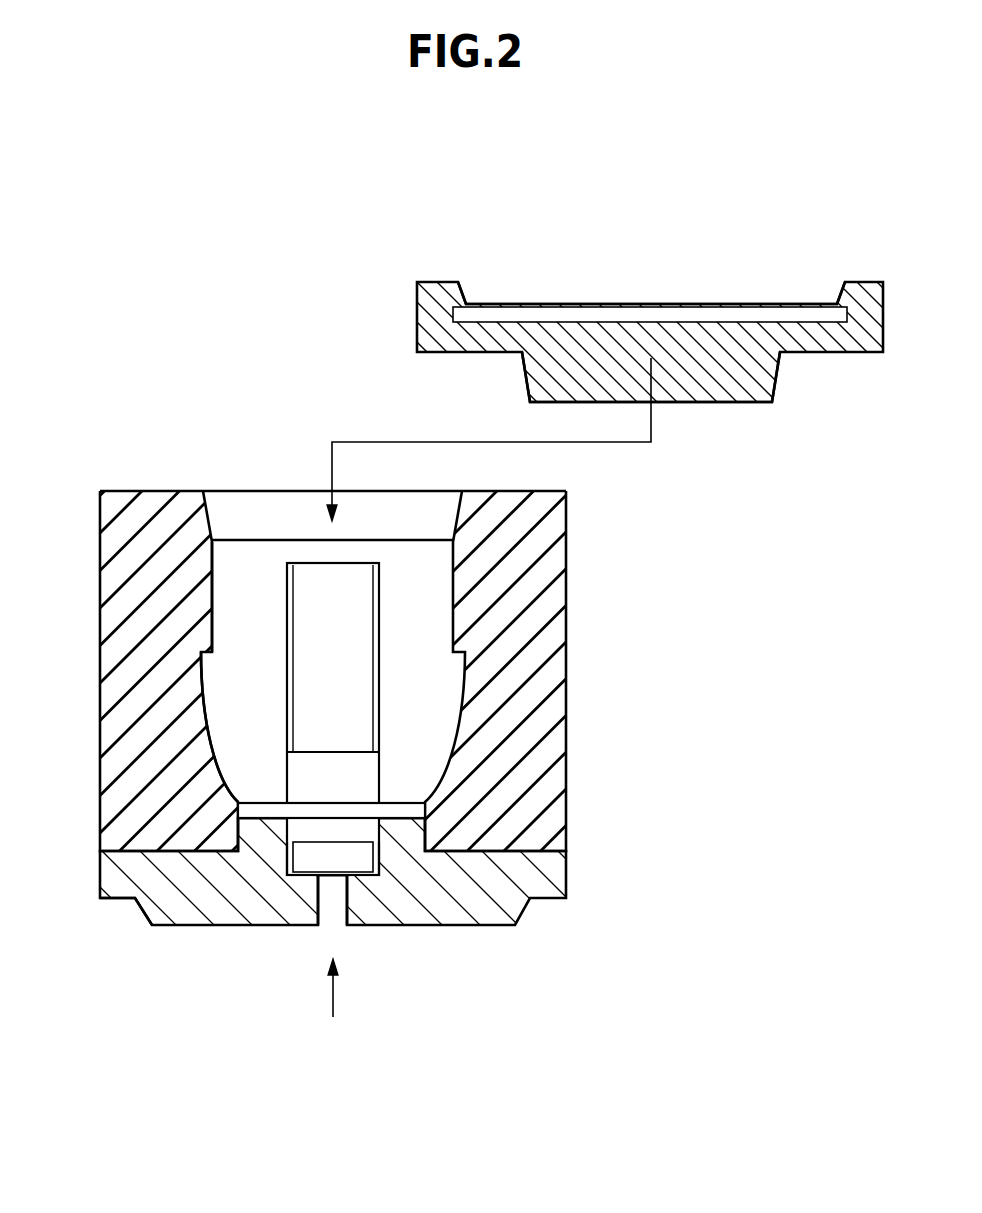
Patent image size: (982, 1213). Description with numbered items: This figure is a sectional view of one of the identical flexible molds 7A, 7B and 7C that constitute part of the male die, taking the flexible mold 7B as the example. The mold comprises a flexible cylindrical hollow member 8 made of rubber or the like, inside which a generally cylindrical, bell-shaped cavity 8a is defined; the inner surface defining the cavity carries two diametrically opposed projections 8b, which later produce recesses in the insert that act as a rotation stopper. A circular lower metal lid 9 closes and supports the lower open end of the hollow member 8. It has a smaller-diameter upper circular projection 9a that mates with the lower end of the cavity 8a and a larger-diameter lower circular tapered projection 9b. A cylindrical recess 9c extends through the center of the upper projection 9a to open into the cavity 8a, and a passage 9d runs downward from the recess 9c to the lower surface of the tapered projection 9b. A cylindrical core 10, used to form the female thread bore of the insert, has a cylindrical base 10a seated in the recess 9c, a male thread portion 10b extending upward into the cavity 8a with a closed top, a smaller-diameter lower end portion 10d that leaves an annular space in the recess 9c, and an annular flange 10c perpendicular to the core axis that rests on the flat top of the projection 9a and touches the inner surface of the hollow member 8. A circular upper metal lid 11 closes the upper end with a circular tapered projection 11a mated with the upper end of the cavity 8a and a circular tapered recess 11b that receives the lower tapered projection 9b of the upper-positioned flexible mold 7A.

The flexible mold 7A is at (650, 437).
The flexible mold 7B is at (349, 758).
The flexible mold 7C is at (334, 1005).
The flexible cylindrical hollow member 8 is at (125, 515).
The cylindrical cavity 8a is at (207, 722).
The projections 8b is at (212, 600).
The circular lower metal lid 9 is at (530, 910).
The smaller-diameter upper circular projection 9a is at (428, 840).
The larger-diameter lower circular tapered projection 9b is at (143, 910).
The cylindrical recess 9c is at (362, 848).
The passage 9d is at (345, 890).
The cylindrical core 10 is at (446, 767).
The cylindrical base 10a is at (358, 780).
The male thread portion 10b is at (380, 625).
The annular flange 10c is at (417, 813).
The smaller-diameter lower end portion 10d is at (305, 860).
The circular upper metal lid 11 is at (878, 353).
The circular tapered projection 11a is at (778, 370).
The circular tapered recess 11b is at (466, 296).